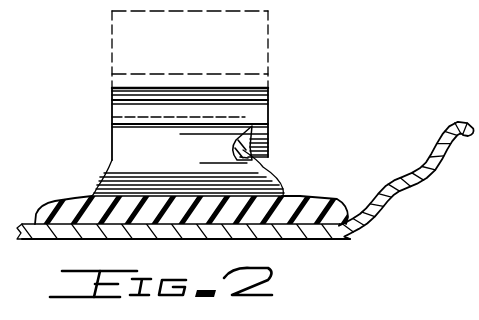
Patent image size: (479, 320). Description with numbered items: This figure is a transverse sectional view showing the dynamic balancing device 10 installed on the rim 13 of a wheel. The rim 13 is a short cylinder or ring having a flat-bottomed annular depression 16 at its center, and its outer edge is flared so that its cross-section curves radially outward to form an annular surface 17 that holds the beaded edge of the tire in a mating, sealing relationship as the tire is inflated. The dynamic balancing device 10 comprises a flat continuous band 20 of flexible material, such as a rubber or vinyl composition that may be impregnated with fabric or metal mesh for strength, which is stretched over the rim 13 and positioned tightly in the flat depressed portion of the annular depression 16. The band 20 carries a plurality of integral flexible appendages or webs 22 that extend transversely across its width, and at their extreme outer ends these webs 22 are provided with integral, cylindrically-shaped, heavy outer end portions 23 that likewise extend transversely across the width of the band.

The dynamic balancing device 10 is at (88, 89).
The rim 13 is at (193, 241).
The annular depression 16 is at (265, 208).
The annular surface 17 is at (419, 166).
The flat continuous band 20 is at (84, 206).
The flexible appendages or webs 22 is at (142, 153).
The heavy outer end portions 23 is at (190, 97).